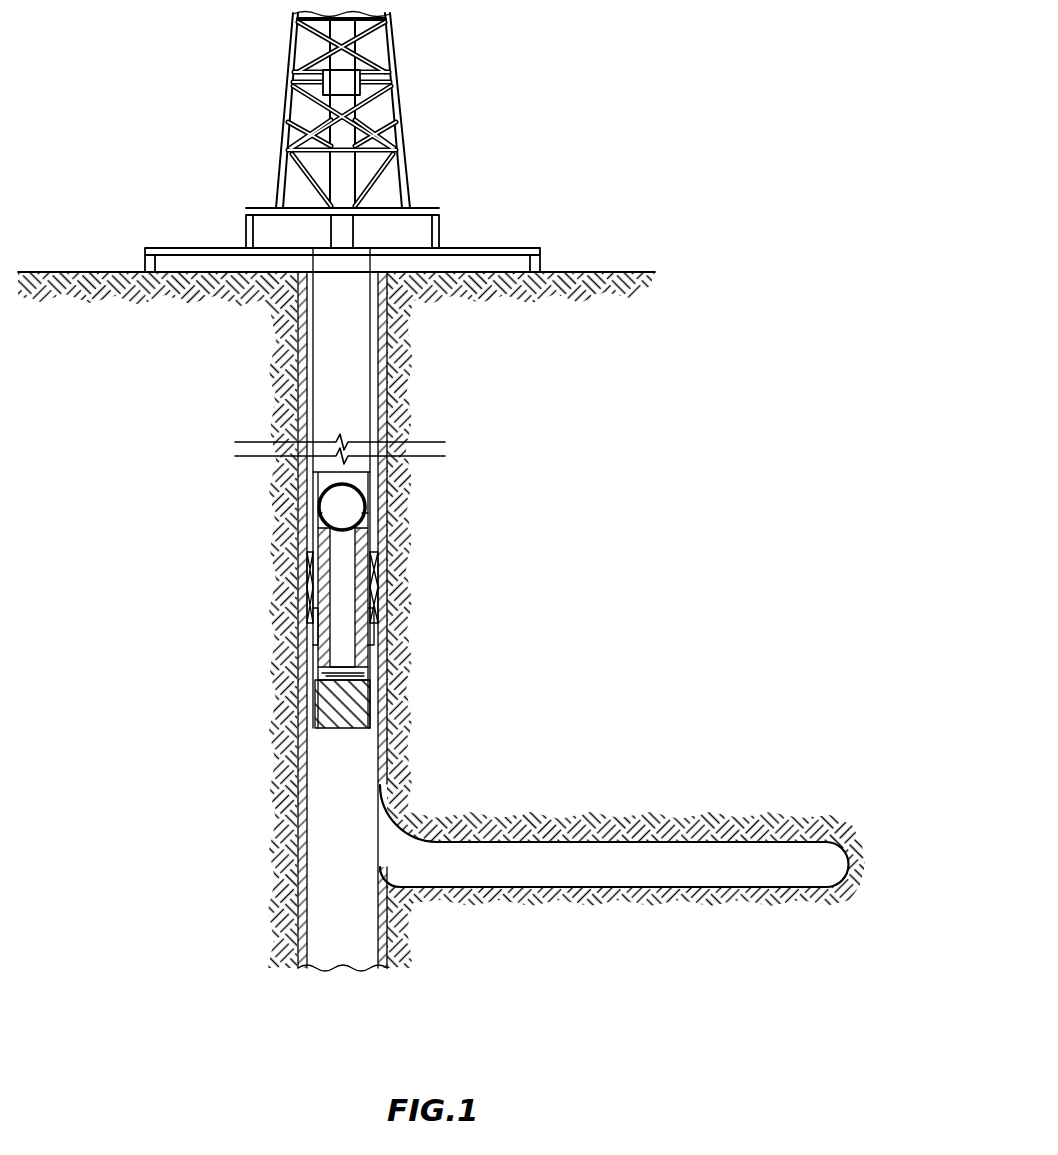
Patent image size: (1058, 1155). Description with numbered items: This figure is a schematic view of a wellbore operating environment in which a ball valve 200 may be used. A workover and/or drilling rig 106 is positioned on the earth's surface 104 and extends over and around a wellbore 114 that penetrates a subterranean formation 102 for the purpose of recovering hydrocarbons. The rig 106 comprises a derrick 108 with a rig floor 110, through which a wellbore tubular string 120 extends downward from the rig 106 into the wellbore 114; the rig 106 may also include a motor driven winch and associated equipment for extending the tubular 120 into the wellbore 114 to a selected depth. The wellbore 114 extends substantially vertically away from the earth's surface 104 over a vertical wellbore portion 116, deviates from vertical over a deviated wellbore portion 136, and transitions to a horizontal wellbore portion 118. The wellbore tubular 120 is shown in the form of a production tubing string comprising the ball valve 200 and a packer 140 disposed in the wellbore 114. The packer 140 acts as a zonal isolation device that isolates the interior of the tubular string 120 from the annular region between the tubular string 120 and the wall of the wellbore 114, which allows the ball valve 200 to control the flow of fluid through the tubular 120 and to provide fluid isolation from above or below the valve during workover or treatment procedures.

The subterranean formation 102 is at (410, 300).
The earth's surface 104 is at (652, 268).
The workover and/or drilling rig 106 is at (445, 88).
The derrick 108 is at (287, 80).
The rig floor 110 is at (425, 208).
The wellbore 114 is at (392, 410).
The vertical wellbore portion 116 is at (392, 482).
The horizontal wellbore portion 118 is at (513, 880).
The wellbore tubular string 120 is at (318, 372).
The deviated wellbore portion 136 is at (422, 808).
The packer 140 is at (378, 580).
The ball valve 200 is at (282, 552).